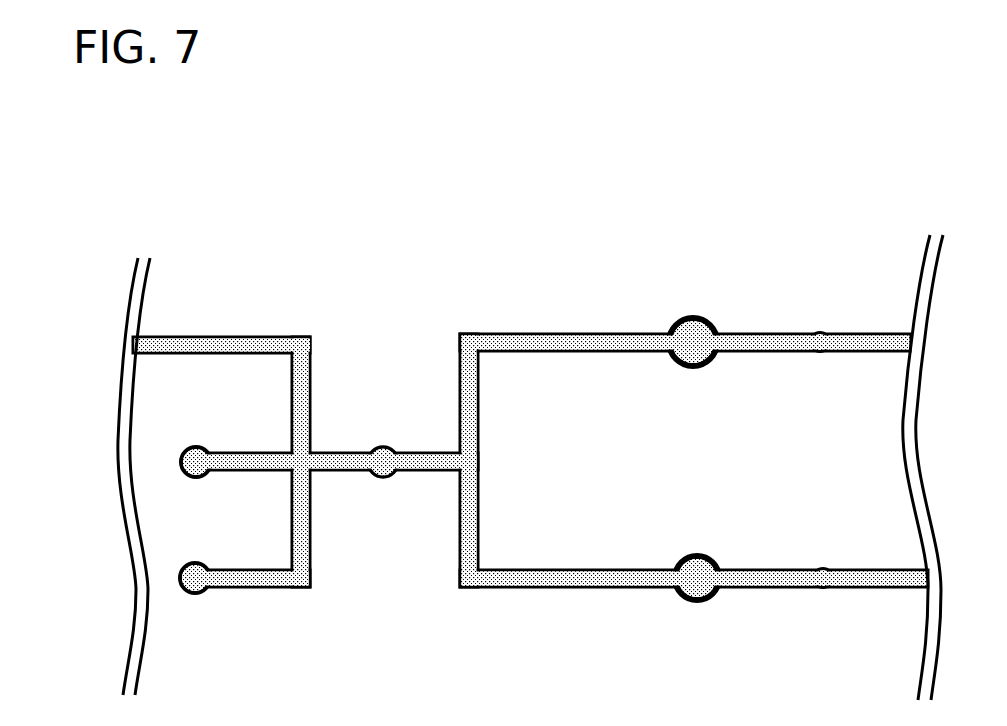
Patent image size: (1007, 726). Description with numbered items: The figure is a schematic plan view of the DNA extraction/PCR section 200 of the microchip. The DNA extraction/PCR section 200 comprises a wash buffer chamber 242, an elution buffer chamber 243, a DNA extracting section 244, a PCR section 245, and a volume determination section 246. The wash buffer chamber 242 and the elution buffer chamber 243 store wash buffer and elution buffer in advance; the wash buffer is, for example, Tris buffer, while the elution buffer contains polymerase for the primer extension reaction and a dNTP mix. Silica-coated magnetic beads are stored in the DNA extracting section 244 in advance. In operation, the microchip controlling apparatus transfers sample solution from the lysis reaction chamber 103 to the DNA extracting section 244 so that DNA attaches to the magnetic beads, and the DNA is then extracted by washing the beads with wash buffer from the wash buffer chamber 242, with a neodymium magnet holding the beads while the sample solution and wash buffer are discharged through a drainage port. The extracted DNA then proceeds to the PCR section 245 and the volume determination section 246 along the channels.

The lysis reaction chamber 103 is at (90, 476).
The DNA extraction/PCR section 200 is at (886, 241).
The wash buffer chamber 242 is at (201, 474).
The elution buffer chamber 243 is at (200, 590).
The DNA extracting section 244 is at (390, 456).
The PCR section 245 is at (693, 343).
The volume determination section 246 is at (819, 345).